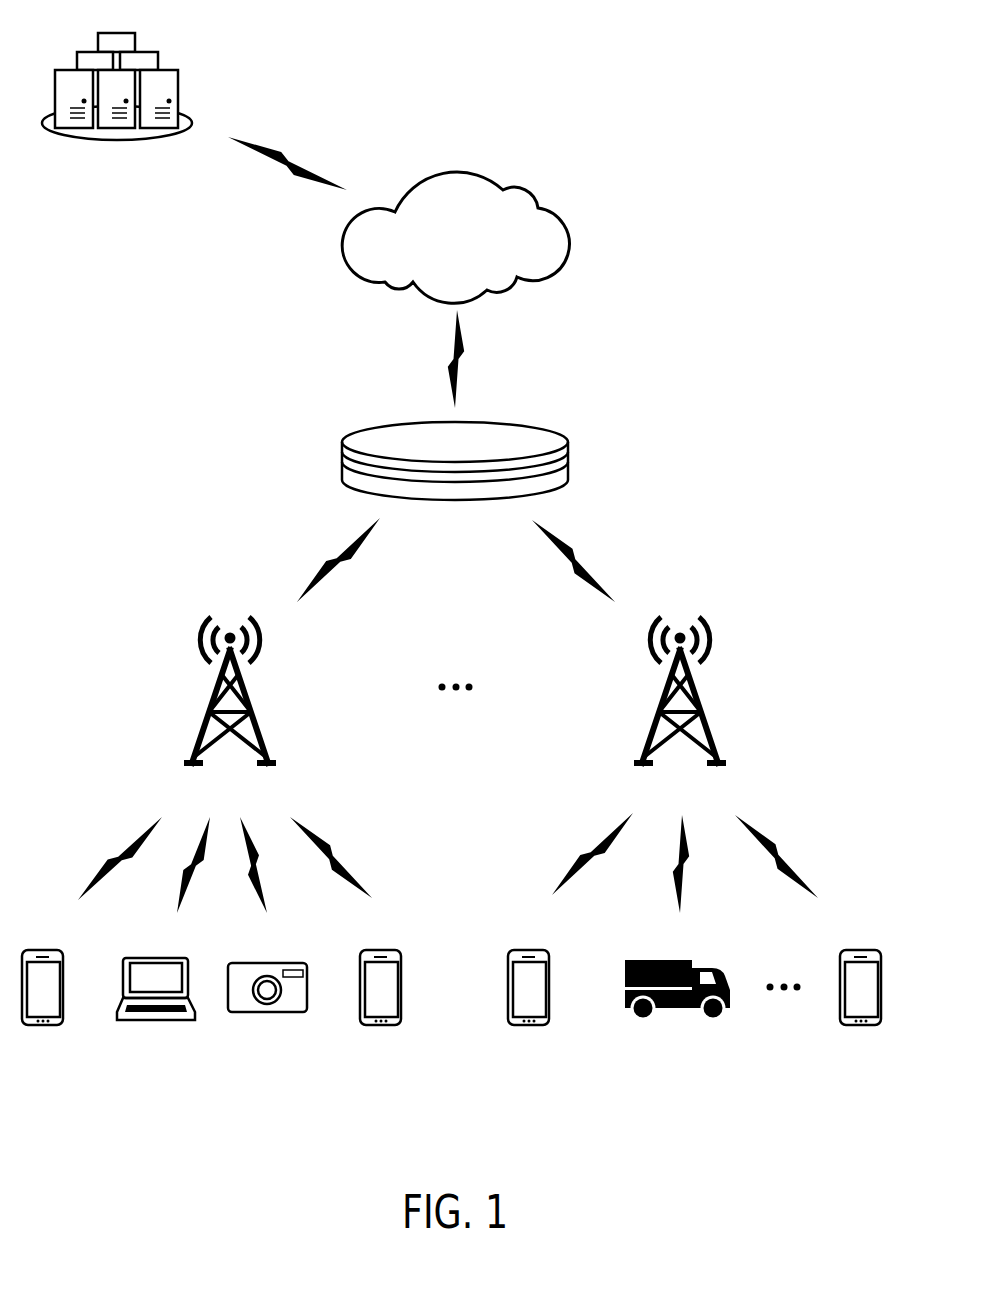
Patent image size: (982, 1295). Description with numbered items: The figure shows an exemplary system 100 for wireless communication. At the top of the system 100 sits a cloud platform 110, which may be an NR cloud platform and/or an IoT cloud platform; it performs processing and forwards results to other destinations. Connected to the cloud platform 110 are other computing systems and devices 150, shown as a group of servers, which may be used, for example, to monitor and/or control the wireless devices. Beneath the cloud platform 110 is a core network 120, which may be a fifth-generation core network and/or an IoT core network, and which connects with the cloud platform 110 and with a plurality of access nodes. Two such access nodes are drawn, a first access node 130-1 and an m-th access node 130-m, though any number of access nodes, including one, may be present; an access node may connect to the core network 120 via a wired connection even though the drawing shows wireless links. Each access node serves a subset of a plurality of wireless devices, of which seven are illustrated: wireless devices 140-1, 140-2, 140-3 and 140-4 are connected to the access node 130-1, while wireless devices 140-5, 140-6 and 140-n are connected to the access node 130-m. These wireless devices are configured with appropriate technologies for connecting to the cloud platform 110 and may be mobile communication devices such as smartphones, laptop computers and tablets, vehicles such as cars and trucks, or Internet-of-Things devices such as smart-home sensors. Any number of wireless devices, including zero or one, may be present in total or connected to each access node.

The system 100 is at (716, 91).
The cloud platform 110 is at (568, 235).
The core network 120 is at (570, 445).
The access node 130-1 is at (255, 710).
The access node 130-m is at (705, 710).
The wireless device 140-1 is at (42, 1027).
The wireless device 140-2 is at (162, 1020).
The wireless device 140-3 is at (268, 1012).
The wireless device 140-4 is at (382, 1027).
The wireless device 140-5 is at (530, 1027).
The wireless device 140-6 is at (650, 1012).
The wireless device 140-n is at (860, 1027).
The computing systems and devices 150 is at (158, 57).